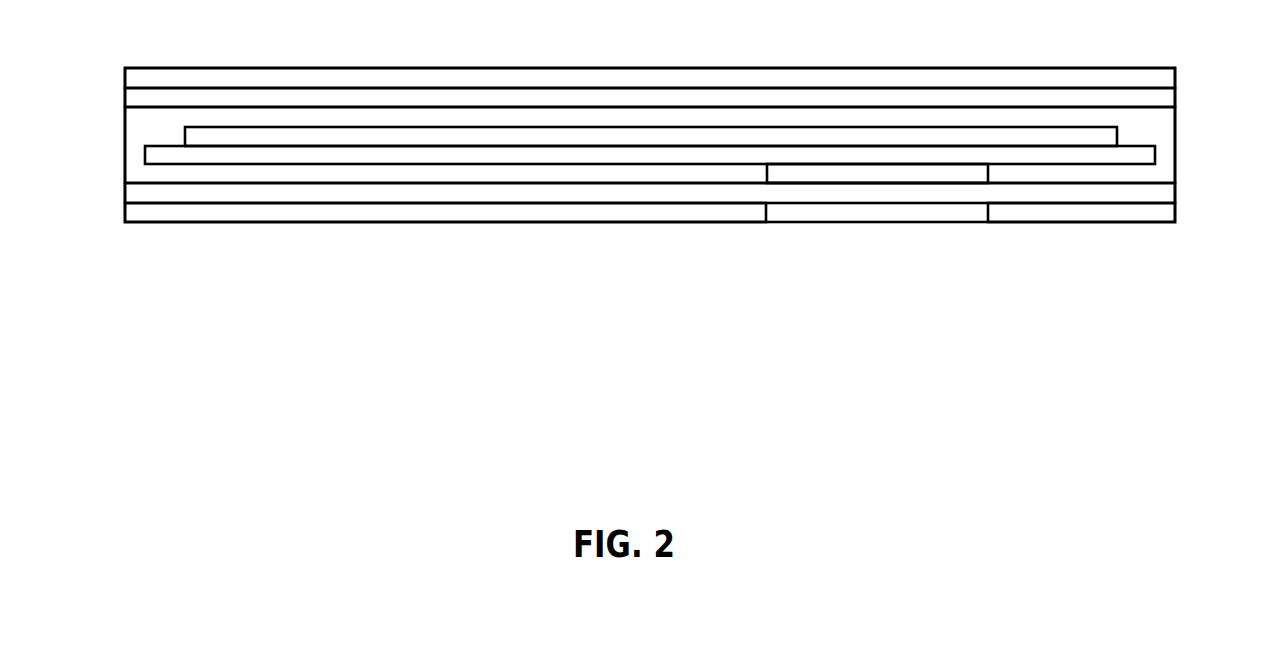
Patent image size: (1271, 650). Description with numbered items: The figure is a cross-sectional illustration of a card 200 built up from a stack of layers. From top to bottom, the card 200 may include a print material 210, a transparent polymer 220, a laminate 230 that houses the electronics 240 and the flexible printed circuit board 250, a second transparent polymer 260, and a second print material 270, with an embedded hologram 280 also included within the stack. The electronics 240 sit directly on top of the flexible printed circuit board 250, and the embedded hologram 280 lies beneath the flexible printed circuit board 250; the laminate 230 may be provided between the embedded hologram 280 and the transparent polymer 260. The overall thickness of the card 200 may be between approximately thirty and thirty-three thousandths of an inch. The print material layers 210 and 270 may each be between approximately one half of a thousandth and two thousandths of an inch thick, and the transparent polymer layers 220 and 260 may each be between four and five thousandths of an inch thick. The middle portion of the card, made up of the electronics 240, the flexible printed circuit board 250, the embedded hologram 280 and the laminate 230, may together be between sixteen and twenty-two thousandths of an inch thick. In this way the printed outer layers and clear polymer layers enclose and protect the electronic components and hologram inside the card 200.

The card 200 is at (1222, 178).
The print material 210 is at (125, 68).
The transparent polymer 220 is at (125, 88).
The laminate 230 is at (125, 127).
The electronics 240 is at (186, 130).
The flexible printed circuit board 250 is at (145, 156).
The transparent polymer 260 is at (125, 183).
The print material 270 is at (125, 222).
The embedded hologram 280 is at (838, 172).